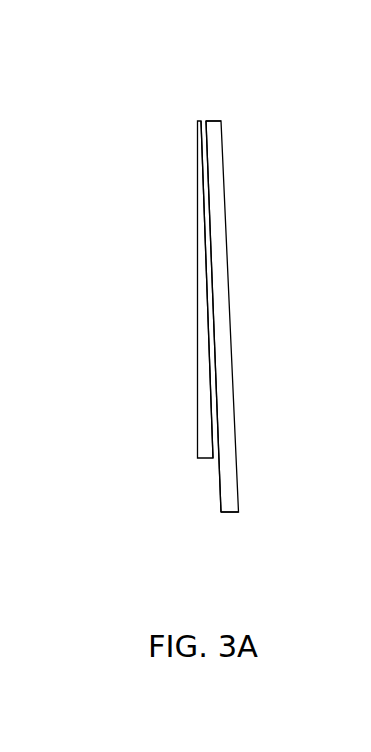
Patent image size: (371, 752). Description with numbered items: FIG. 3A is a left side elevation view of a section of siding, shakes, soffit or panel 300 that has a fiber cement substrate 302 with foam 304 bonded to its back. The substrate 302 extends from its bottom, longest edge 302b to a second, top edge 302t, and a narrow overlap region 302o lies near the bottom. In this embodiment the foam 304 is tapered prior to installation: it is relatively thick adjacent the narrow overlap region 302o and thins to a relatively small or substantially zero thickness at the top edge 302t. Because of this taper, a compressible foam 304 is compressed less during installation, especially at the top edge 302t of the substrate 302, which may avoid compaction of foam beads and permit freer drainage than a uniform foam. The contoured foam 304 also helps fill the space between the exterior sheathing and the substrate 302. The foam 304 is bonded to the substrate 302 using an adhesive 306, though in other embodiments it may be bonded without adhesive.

The section of siding, shakes, soffit or panel 300 is at (211, 295).
The fiber cement substrate 302 is at (223, 295).
The top edge 302t is at (213, 121).
The bottom edge 302b is at (227, 512).
The narrow overlap region 302o is at (222, 501).
The foam 304 is at (198, 342).
The adhesive 306 is at (212, 430).